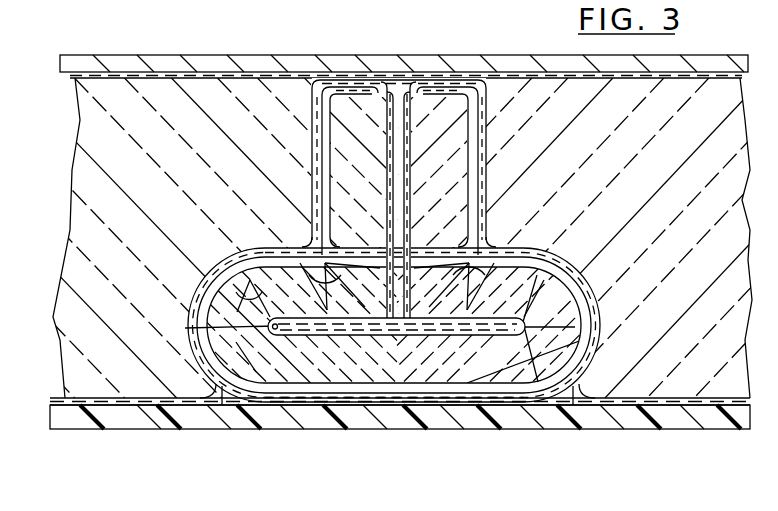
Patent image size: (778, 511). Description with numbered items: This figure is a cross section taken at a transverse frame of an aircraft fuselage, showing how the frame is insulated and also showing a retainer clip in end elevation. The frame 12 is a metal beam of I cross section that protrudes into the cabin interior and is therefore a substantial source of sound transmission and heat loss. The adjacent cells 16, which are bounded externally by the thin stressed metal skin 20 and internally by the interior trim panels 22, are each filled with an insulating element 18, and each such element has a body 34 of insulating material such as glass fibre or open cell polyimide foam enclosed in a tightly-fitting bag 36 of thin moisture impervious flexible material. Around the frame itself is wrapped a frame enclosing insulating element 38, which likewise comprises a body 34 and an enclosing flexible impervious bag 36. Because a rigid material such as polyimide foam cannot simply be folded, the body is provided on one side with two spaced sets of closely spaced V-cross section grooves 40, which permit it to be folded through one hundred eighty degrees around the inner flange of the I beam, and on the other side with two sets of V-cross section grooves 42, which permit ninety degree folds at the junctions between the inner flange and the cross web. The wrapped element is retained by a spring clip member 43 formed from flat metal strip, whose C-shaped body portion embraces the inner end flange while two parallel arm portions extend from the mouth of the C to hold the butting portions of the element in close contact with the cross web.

The circular frame 12 is at (436, 72).
The cell 16 is at (226, 403).
The insulating element 18 is at (121, 416).
The metal skin 20 is at (218, 64).
The interior trim panel 22 is at (150, 426).
The body 34 is at (78, 163).
The bag 36 is at (183, 404).
The frame enclosing insulating element 38 is at (392, 408).
The V-cross section grooves 40 is at (199, 317).
The V-cross section grooves 42 is at (296, 247).
The spring clip member 43 is at (357, 406).